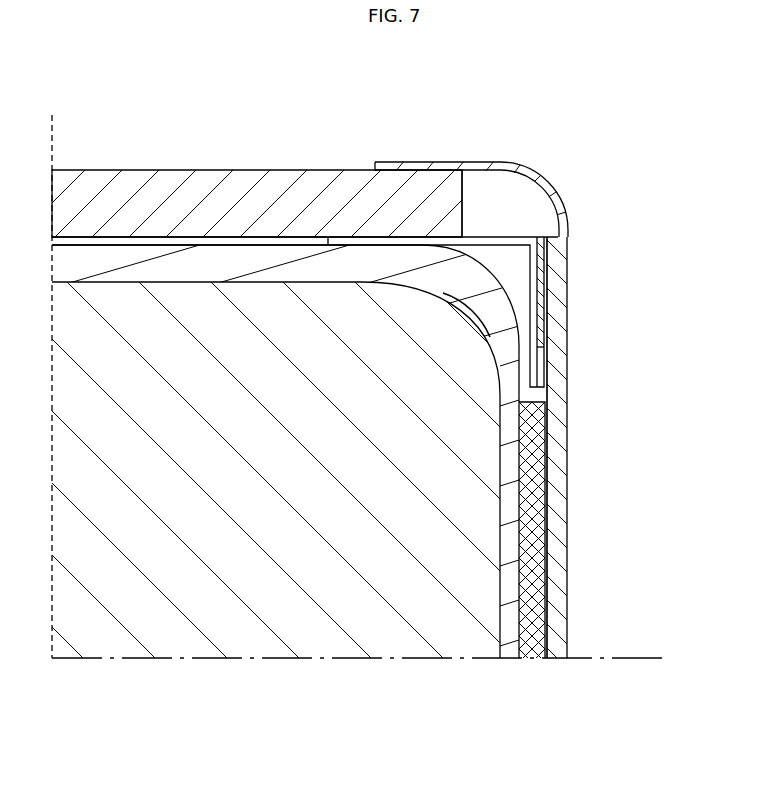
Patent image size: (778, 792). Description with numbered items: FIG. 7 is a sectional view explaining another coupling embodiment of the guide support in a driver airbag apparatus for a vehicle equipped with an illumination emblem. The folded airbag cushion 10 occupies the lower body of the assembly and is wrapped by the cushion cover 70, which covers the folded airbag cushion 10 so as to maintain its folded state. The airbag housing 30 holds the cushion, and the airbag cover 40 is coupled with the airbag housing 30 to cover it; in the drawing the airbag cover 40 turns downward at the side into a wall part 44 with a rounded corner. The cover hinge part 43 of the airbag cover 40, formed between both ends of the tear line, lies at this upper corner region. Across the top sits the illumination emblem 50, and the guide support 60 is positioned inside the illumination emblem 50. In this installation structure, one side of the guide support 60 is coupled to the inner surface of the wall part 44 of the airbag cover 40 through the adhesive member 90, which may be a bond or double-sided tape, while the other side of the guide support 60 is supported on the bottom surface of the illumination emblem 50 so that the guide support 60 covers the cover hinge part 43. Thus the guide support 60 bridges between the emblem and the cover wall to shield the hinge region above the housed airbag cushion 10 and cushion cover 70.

The airbag cushion 10 is at (320, 628).
The airbag housing 30 is at (533, 543).
The airbag cover 40 is at (577, 483).
The cover hinge part 43 is at (550, 195).
The wall part 44 is at (557, 508).
The illumination emblem 50 is at (143, 195).
The guide support 60 is at (489, 237).
The cushion cover 70 is at (248, 268).
The adhesive member 90 is at (540, 293).